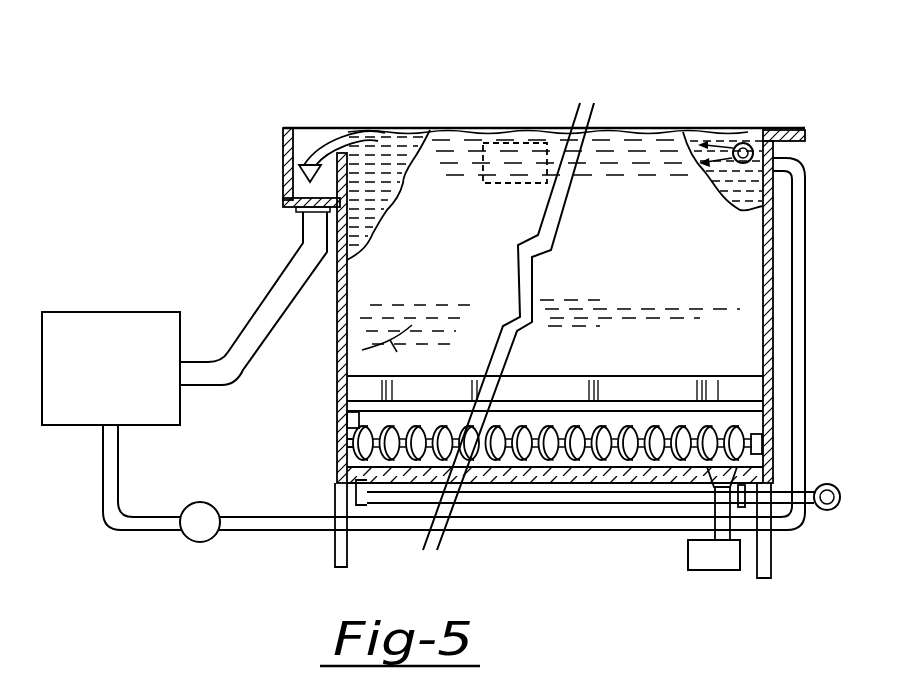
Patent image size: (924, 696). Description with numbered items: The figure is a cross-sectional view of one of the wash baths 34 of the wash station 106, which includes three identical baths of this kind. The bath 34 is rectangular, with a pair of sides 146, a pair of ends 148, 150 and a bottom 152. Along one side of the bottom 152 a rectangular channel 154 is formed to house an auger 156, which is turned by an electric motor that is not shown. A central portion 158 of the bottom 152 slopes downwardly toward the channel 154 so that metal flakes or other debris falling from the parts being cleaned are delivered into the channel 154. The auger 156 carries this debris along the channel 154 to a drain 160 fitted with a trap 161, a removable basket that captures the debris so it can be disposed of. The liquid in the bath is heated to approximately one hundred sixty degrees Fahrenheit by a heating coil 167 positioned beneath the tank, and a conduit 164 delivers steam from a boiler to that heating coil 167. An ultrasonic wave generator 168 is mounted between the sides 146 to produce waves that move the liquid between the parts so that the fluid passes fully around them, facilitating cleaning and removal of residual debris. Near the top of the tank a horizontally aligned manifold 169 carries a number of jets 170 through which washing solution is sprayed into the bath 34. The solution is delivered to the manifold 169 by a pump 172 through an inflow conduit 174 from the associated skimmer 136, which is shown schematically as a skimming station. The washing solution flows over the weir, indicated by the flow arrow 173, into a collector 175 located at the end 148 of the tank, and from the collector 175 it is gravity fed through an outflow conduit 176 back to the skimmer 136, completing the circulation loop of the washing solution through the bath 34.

The bath 34 is at (455, 100).
The wash station 106 is at (648, 95).
The skimmer 136 is at (143, 312).
The sides 146 is at (628, 233).
The end 148 is at (380, 236).
The end 150 is at (763, 236).
The bottom 152 is at (560, 393).
The channel 154 is at (360, 418).
The auger 156 is at (680, 433).
The central portion 158 is at (555, 362).
The drain 160 is at (720, 508).
The trap 161 is at (712, 562).
The conduit 164 is at (830, 512).
The heating coil 167 is at (518, 494).
The ultrasonic wave generator 168 is at (513, 143).
The manifold 169 is at (750, 143).
The jets 170 is at (735, 142).
The pump 172 is at (198, 543).
The overflow 173 is at (381, 132).
The inflow conduit 174 is at (556, 526).
The collector 175 is at (283, 157).
The outflow conduit 176 is at (268, 288).